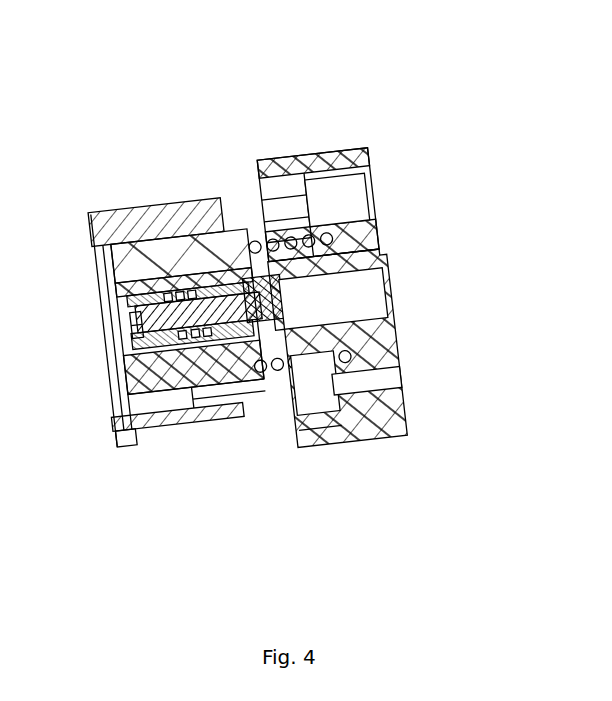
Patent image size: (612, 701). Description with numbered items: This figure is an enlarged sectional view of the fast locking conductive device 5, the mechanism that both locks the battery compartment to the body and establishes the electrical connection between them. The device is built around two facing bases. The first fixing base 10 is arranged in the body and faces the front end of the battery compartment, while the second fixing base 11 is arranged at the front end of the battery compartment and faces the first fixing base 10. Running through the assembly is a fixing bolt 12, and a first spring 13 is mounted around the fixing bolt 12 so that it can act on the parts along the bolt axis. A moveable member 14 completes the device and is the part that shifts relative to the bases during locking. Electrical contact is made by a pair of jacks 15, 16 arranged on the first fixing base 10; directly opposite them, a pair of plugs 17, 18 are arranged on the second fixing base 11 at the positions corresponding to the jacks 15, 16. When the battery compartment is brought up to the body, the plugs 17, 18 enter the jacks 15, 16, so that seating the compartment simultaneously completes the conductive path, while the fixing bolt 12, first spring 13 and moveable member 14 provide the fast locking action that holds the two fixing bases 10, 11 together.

The fast locking conductive device 5 is at (243, 267).
The first fixing base 10 is at (381, 423).
The second fixing base 11 is at (163, 404).
The fixing bolt 12 is at (219, 318).
The first spring 13 is at (167, 343).
The moveable member 14 is at (205, 290).
The jack 15 is at (352, 198).
The jack 16 is at (392, 385).
The plug 17 is at (182, 213).
The plug 18 is at (211, 414).